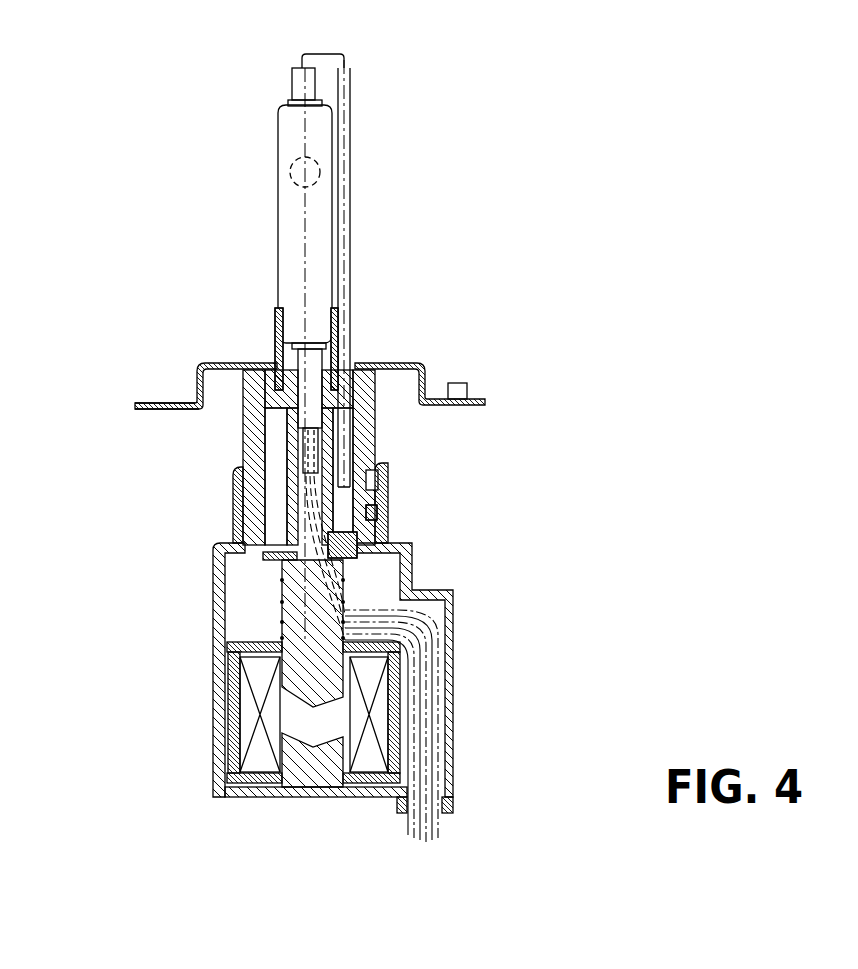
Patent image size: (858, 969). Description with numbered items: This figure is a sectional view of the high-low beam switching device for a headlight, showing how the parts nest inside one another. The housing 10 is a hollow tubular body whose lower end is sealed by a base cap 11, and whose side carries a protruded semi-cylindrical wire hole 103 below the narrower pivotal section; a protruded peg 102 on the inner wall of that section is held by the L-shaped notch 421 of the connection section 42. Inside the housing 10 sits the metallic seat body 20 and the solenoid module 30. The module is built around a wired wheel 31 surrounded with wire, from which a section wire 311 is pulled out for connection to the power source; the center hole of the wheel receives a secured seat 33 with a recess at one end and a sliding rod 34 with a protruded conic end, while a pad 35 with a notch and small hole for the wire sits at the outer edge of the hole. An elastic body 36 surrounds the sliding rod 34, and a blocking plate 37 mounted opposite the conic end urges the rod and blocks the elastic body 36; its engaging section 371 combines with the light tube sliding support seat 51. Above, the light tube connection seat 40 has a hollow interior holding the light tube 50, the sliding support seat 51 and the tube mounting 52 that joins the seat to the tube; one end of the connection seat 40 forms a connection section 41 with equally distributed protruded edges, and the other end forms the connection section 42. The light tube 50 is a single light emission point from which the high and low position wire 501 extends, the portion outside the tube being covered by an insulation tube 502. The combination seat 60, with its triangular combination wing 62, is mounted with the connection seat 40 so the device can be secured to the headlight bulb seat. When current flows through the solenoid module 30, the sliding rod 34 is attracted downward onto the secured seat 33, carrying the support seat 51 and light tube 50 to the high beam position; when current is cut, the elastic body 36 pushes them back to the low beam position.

The housing 10 is at (210, 758).
The base cap 11 is at (253, 797).
The seat body 20 is at (395, 715).
The solenoid module 30 is at (392, 690).
The wired wheel 31 is at (350, 797).
The section wire 311 is at (401, 813).
The secured seat 33 is at (297, 797).
The sliding rod 34 is at (297, 653).
The pad 35 is at (268, 642).
The elastic body 36 is at (280, 600).
The blocking plate 37 is at (262, 558).
The engaging section 371 is at (365, 557).
The light tube connection seat 40 is at (240, 441).
The connection section 41 is at (368, 390).
The connection section 42 is at (248, 522).
The L-shaped notch 421 is at (378, 478).
The light tube 50 is at (272, 148).
The high and low position wire 501 is at (442, 845).
The insulation tube 502 is at (352, 160).
The light tube sliding support seat 51 is at (270, 386).
The tube mounting 52 is at (345, 332).
The combination seat 60 is at (225, 363).
The combination wing 62 is at (168, 400).
The protruded peg 102 is at (378, 513).
The wire hole 103 is at (465, 813).